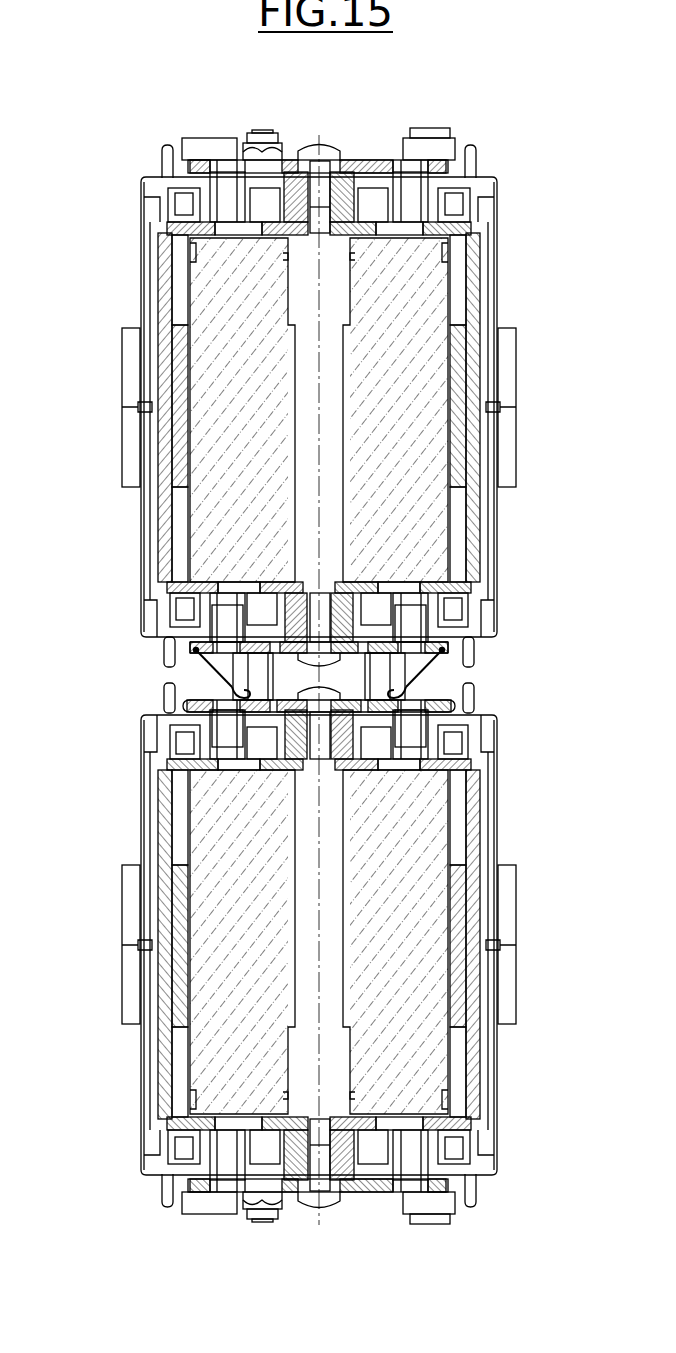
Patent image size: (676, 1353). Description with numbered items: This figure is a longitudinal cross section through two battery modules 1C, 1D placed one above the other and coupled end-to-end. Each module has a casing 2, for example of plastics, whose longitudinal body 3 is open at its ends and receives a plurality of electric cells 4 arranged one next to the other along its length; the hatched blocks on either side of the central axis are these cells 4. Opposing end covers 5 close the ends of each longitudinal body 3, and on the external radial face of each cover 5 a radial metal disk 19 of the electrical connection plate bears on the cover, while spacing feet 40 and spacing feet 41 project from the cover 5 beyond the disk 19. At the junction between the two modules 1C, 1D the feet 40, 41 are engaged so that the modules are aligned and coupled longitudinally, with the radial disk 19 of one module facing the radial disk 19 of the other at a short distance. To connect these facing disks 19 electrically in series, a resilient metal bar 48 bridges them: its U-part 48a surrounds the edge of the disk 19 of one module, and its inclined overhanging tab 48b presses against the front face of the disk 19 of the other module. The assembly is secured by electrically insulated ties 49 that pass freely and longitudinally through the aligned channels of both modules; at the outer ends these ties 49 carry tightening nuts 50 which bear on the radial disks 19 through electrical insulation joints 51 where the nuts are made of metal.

The battery module 1C is at (102, 380).
The battery module 1D is at (107, 930).
The casing 2 is at (507, 510).
The longitudinal body 3 is at (502, 436).
The electric cells 4 is at (427, 297).
The end cover 5 is at (502, 622).
The radial metal disk 19 is at (162, 650).
The spacing feet 40 is at (148, 733).
The spacing feet 41 is at (145, 638).
The resilient metal bar 48 is at (418, 687).
The U-part 48a is at (450, 694).
The inclined overhanging tab 48b is at (455, 672).
The tie 49 is at (183, 680).
The tightening nut 50 is at (238, 148).
The electrical insulation joint 51 is at (292, 158).